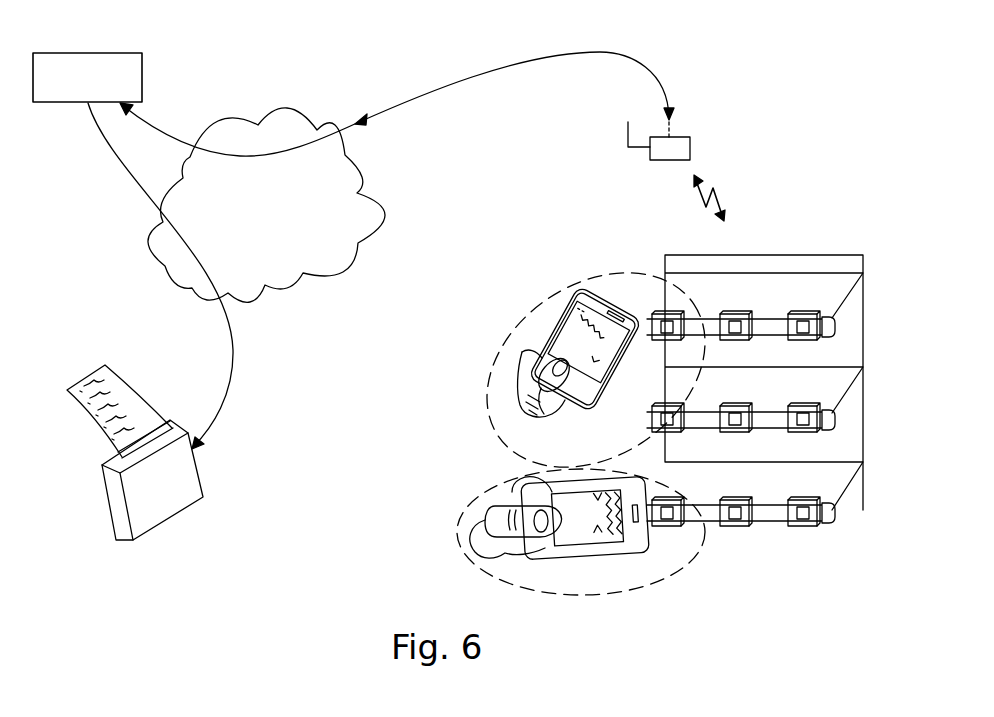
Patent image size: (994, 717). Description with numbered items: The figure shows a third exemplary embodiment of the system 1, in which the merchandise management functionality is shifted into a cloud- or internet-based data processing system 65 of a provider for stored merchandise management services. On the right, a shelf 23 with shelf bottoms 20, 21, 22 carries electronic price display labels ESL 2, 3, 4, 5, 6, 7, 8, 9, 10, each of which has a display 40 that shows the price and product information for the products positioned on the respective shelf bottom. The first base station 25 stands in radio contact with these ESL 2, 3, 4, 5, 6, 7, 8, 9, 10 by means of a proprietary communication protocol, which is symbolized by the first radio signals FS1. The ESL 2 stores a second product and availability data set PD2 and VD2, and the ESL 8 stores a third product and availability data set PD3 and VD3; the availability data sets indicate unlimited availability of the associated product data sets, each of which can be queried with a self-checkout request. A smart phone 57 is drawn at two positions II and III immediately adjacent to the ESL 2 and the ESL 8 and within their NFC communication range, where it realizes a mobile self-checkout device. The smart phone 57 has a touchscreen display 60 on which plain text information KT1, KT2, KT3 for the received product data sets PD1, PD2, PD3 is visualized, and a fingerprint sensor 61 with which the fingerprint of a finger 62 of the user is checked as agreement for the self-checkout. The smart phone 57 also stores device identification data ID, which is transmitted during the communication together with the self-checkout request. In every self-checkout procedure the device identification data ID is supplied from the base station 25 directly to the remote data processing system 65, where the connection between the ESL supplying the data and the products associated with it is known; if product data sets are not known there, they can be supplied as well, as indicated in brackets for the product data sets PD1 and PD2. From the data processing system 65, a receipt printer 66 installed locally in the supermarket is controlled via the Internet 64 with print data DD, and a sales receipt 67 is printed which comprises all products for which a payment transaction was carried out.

The system 1 is at (826, 68).
The data processing system 65 is at (142, 80).
The Internet 64 is at (383, 222).
The receipt printer 66 is at (209, 474).
The sales receipt 67 is at (138, 388).
The first base station 25 is at (692, 136).
The shelf 23 is at (828, 252).
The shelf bottom 21 is at (853, 388).
The display 40 is at (666, 341).
The ESL 2 is at (682, 312).
The ESL 3 is at (734, 314).
The ESL 4 is at (800, 314).
The ESL 5 is at (667, 406).
The ESL 6 is at (733, 406).
The ESL 7 is at (801, 406).
The ESL 8 is at (668, 500).
The ESL 9 is at (733, 500).
The ESL 10 is at (803, 500).
The shelf bottom 20 is at (650, 280).
The shelf bottom 22 is at (665, 470).
The touchscreen display 60 is at (542, 346).
The fingerprint sensor 61 is at (540, 362).
The finger 62 is at (535, 422).
The smart phone 57 is at (518, 388).
The position II is at (570, 286).
The position III is at (468, 515).
The device identification data ID is at (497, 65).
The first product data set PD1 is at (465, 78).
The second product data set PD2 is at (398, 103).
The third product data set PD3 is at (693, 522).
The second availability data set VD2 is at (657, 300).
The third availability data set VD3 is at (688, 535).
The plain text information KT1 is at (590, 307).
The plain text information KT2 is at (571, 309).
The plain text information KT3 is at (603, 547).
The print data DD is at (231, 367).
The first radio signals FS1 is at (730, 200).